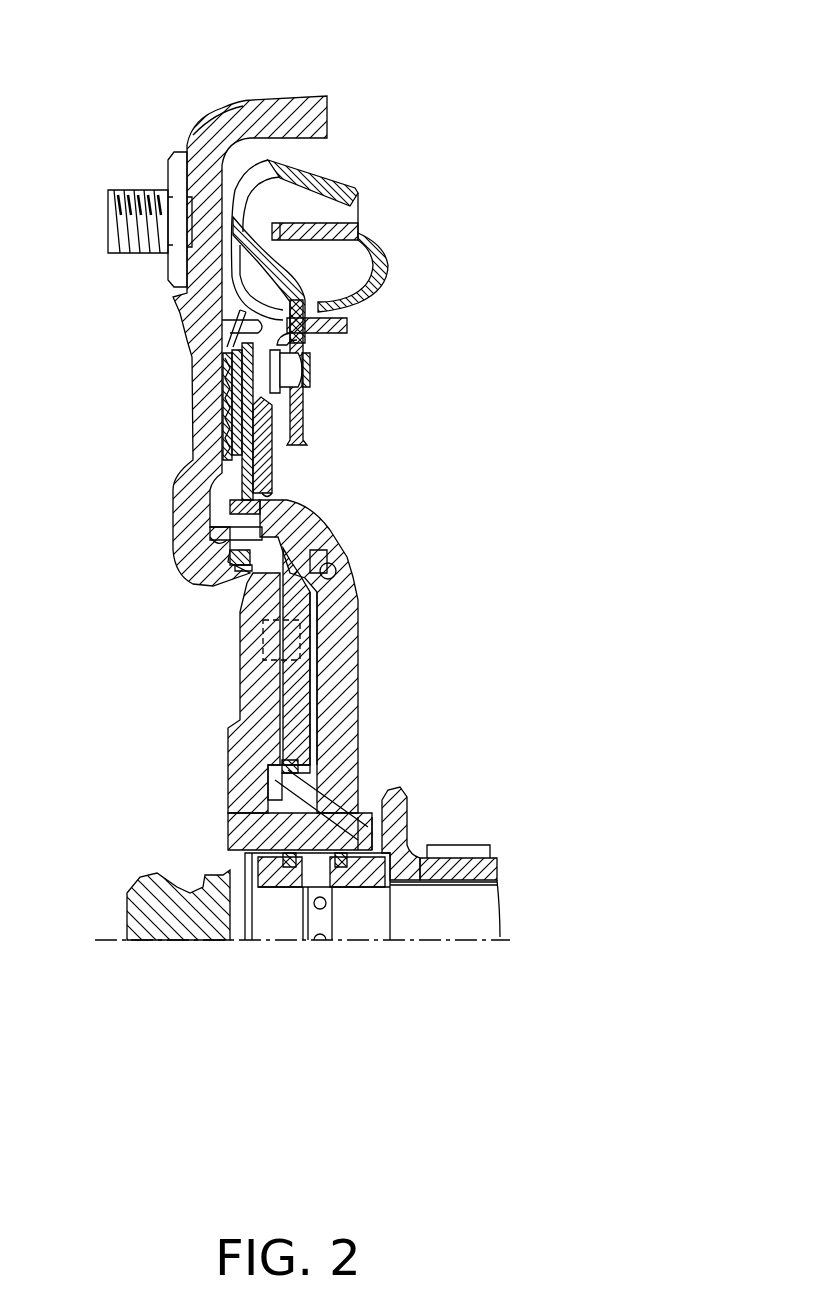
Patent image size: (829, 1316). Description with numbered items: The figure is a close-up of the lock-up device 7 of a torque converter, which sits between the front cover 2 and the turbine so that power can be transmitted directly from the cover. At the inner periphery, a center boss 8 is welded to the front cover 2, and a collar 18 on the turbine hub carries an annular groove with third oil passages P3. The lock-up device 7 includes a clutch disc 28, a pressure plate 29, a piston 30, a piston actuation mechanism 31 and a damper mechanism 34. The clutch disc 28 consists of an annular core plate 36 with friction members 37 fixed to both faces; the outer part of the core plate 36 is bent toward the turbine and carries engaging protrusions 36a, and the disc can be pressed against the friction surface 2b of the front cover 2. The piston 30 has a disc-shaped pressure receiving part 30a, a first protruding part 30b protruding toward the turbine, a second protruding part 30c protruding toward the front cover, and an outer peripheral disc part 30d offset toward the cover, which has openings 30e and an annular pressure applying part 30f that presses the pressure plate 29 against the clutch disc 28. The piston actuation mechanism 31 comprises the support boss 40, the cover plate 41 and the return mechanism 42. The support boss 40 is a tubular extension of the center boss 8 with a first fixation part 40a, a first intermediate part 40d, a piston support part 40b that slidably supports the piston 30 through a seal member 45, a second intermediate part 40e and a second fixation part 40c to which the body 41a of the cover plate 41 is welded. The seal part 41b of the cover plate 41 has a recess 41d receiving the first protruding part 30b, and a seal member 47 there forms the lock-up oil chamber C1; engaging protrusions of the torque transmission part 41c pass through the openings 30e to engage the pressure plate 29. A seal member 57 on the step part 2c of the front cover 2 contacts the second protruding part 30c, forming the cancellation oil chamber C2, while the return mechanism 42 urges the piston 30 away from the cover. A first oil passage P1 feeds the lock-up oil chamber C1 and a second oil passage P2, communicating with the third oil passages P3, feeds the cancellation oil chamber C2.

The lock-up device 7 is at (387, 143).
The front cover 2 is at (172, 572).
The damper mechanism 34 is at (373, 202).
The pressure plate 29 is at (340, 345).
The engaging protrusions 36a is at (222, 322).
The clutch disc 28 is at (220, 380).
The core plate 36 is at (231, 413).
The friction members 37 is at (245, 435).
The friction surface 2b is at (230, 480).
The torque transmission part 41c is at (232, 508).
The second protruding part 30c is at (207, 530).
The seal member 57 is at (207, 582).
The step part 2c is at (240, 578).
The pressure applying part 30f is at (308, 400).
The outer peripheral disc part 30d is at (260, 410).
The piston 30 is at (283, 472).
The openings 30e is at (270, 492).
The cover plate 41 is at (350, 728).
The seal part 41b is at (320, 535).
The seal member 47 is at (347, 550).
The first protruding part 30b is at (323, 557).
The recess 41d is at (353, 593).
The pressure receiving part 30a is at (340, 613).
The body 41a is at (347, 637).
The lock-up oil chamber C1 is at (347, 670).
The piston actuation mechanism 31 is at (353, 693).
The cancellation oil chamber C2 is at (267, 623).
The return mechanism 42 is at (260, 653).
The seal member 45 is at (232, 728).
The first intermediate part 40d is at (247, 797).
The first fixation part 40a is at (262, 790).
The piston support part 40b is at (302, 762).
The second intermediate part 40e is at (358, 787).
The second fixation part 40c is at (400, 787).
The support boss 40 is at (227, 837).
The first oil passage P1 is at (228, 850).
The center boss 8 is at (133, 877).
The collar 18 is at (263, 883).
The second oil passage P2 is at (303, 855).
The third oil passages P3 is at (312, 893).